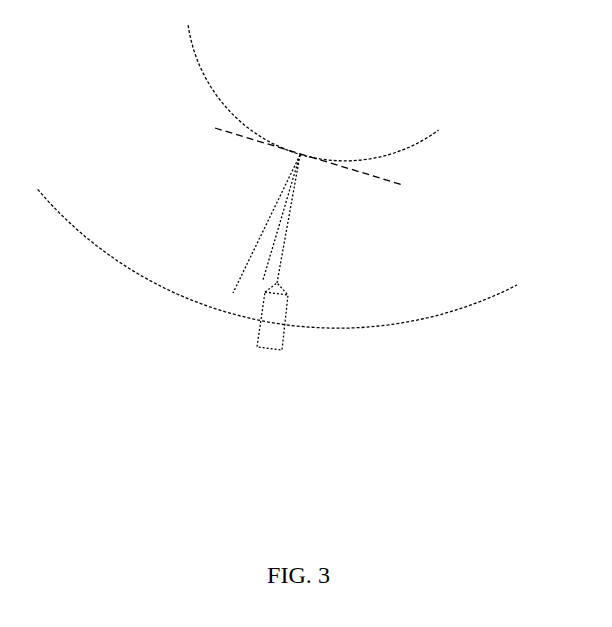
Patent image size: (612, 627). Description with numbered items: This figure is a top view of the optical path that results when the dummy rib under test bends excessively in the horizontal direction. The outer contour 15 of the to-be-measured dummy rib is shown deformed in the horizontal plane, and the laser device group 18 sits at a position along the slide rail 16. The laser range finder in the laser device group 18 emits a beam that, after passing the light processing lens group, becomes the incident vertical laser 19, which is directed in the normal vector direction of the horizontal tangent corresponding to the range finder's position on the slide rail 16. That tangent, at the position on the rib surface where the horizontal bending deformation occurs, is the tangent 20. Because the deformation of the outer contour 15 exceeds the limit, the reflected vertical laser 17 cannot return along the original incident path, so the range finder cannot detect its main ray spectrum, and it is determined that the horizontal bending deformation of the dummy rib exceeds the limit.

The outer contour of to-be-measured dummy rib 15 is at (225, 107).
The slide rail 16 is at (133, 270).
The reflected vertical laser 17 is at (233, 293).
The laser device group 18 is at (280, 320).
The incident vertical laser 19 is at (287, 230).
The tangent of a corresponding position on a surface of to-be-measured dummy rib 20 is at (357, 171).